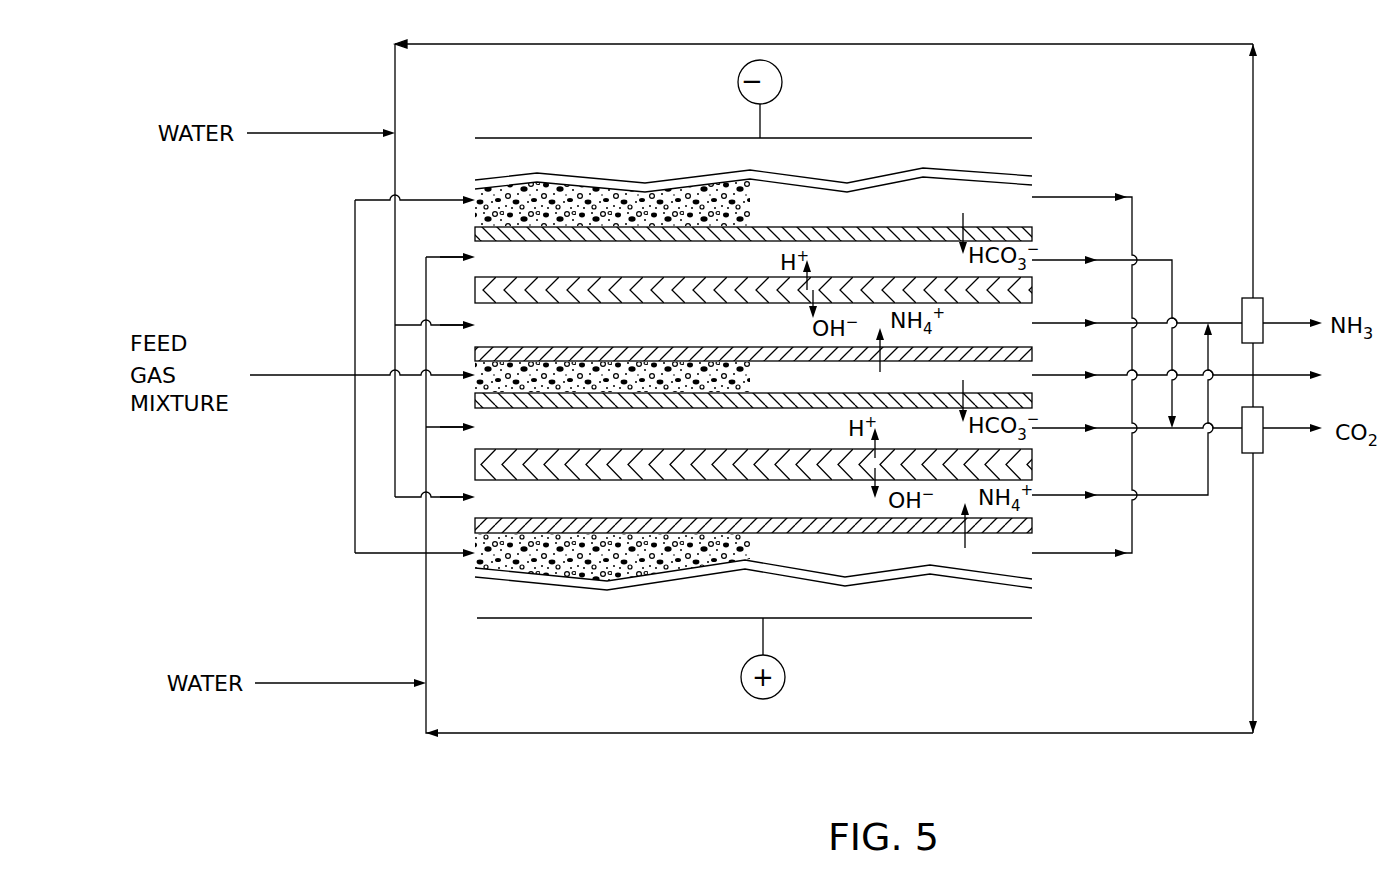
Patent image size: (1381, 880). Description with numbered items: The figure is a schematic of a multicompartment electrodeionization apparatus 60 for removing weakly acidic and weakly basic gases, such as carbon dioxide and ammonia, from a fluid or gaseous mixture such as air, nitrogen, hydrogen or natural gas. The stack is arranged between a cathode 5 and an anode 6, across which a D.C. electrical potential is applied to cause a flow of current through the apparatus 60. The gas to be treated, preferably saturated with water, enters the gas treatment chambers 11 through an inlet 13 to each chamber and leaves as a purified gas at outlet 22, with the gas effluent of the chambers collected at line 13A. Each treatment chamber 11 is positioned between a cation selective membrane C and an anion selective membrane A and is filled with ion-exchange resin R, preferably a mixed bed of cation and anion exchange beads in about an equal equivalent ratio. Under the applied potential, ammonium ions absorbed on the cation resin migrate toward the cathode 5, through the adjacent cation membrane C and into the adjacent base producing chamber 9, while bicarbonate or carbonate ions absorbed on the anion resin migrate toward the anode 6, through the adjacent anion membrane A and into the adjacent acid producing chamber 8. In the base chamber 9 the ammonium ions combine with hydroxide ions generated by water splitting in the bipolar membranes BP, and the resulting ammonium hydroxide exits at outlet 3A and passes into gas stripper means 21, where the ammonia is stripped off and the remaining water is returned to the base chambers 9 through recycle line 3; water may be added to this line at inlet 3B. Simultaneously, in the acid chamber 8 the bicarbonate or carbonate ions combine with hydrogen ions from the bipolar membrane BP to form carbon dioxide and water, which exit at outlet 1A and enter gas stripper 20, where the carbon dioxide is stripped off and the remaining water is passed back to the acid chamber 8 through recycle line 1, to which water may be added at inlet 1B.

The multicompartment electrodeionization apparatus 60 is at (322, 63).
The recycle line 1 is at (426, 265).
The recycle line 3 is at (960, 44).
The cathode 5 is at (970, 137).
The anode 6 is at (978, 620).
The acid producing chamber 8 is at (485, 345).
The base producing chamber 9 is at (485, 411).
The gas treatment chamber 11 is at (753, 379).
The inlet 13 is at (418, 200).
The gas effluent stream 13A is at (1072, 197).
The outlet 1A is at (1175, 287).
The inlet 1B is at (290, 683).
The outlet 3A is at (1137, 425).
The inlet 3B is at (282, 133).
The gas stripper 20 is at (1264, 440).
The gas stripper means 21 is at (1260, 310).
The outlet 22 is at (1282, 378).
The ion-exchange resin R is at (612, 380).
The anion selective membrane A is at (1035, 470).
The cation selective membrane C is at (1035, 526).
The bipolar membrane BP is at (473, 282).